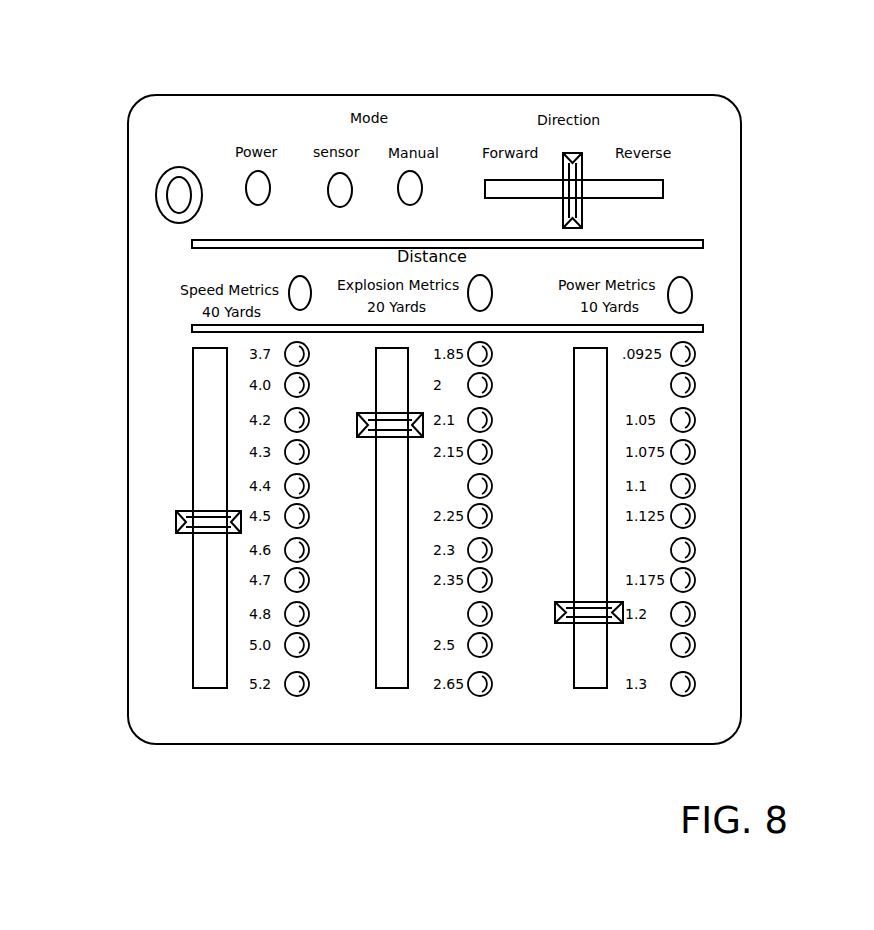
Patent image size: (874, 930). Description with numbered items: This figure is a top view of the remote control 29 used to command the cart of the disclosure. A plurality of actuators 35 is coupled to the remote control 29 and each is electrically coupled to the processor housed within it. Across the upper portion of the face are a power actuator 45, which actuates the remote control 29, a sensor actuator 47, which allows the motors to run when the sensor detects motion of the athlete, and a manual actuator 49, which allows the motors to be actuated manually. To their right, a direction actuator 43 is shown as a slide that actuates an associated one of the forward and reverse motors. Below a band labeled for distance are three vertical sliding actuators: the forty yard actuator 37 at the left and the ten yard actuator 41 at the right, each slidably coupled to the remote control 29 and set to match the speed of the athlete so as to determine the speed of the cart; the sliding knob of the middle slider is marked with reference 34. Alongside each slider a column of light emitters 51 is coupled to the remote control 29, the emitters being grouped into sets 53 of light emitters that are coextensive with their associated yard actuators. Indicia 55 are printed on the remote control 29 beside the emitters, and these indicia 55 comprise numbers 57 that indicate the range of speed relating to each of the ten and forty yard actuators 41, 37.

The remote control 29 is at (727, 100).
The explosion metrics slider 34 is at (390, 440).
The plurality of actuators 35 is at (253, 207).
The forty yard actuator 37 is at (185, 533).
The ten yard actuator 41 is at (590, 623).
The direction actuator 43 is at (572, 158).
The power actuator 45 is at (250, 181).
The sensor actuator 47 is at (328, 177).
The manual actuator 49 is at (417, 178).
The light emitters 51 is at (287, 586).
The sets of light emitters 53 is at (297, 708).
The indicia 55 is at (453, 486).
The numbers 57 is at (455, 611).